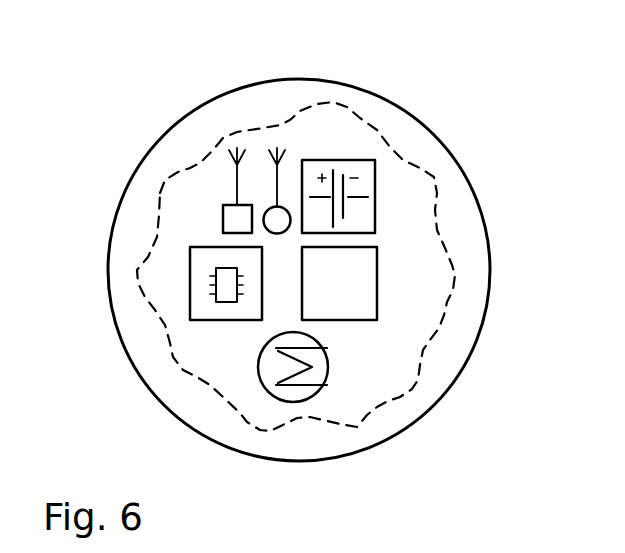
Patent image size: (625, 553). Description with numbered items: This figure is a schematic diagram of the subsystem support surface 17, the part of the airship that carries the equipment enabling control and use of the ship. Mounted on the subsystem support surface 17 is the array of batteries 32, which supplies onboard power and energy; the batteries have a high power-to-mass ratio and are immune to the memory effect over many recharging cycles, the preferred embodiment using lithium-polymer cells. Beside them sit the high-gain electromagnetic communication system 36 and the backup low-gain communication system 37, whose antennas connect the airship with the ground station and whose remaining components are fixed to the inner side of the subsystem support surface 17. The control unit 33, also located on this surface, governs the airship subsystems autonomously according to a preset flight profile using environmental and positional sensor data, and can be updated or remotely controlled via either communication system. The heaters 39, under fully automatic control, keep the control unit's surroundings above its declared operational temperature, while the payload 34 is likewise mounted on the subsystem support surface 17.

The subsystem support surface 17 is at (187, 407).
The array of batteries 32 is at (370, 178).
The control unit 33 is at (207, 265).
The payload 34 is at (362, 306).
The high-gain electromagnetic communication system 36 is at (235, 225).
The low-gain communication system 37 is at (283, 212).
The heaters 39 is at (312, 390).